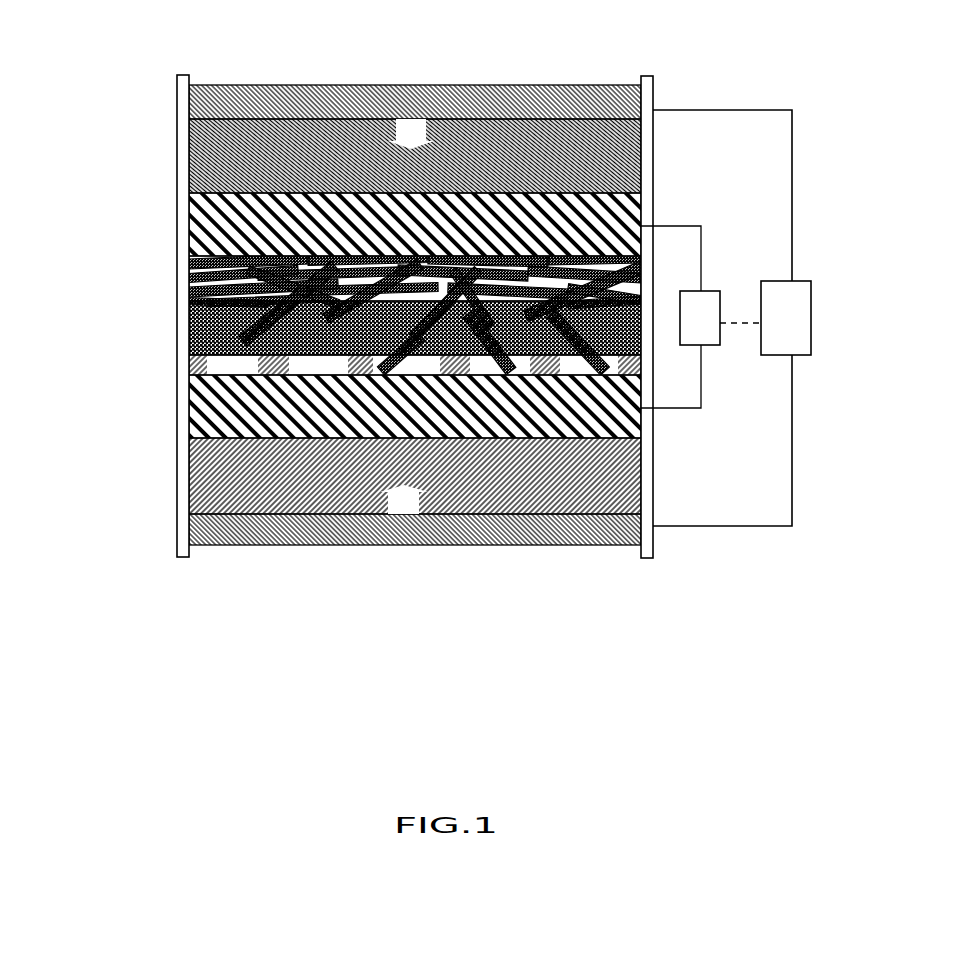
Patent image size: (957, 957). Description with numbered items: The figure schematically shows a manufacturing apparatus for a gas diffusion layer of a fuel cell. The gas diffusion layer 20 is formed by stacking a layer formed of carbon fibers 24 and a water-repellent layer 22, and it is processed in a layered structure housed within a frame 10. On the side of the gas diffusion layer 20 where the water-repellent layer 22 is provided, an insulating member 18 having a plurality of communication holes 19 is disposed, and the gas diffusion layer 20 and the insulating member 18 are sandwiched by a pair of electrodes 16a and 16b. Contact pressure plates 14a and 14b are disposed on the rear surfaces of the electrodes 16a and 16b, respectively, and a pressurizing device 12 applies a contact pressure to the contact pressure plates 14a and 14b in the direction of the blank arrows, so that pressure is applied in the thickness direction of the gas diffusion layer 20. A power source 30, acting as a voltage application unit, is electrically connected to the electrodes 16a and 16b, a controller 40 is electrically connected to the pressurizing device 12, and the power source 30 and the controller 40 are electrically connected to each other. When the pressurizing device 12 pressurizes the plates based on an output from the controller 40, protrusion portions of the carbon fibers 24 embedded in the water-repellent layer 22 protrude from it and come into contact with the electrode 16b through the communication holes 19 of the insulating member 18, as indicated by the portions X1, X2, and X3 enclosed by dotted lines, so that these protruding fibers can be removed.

The frame 10 is at (170, 540).
The pressurizing device 12 is at (513, 77).
The contact pressure plate 14a is at (187, 134).
The contact pressure plate 14b is at (186, 465).
The electrode 16a is at (186, 206).
The electrode 16b is at (186, 400).
The insulating member 18 is at (186, 359).
The communication hole 19 is at (222, 357).
The gas diffusion layer 20 is at (343, 314).
The water-repellent layer 22 is at (186, 320).
The carbon fibers 24 is at (186, 262).
The power source 30 is at (700, 337).
The controller 40 is at (803, 337).
The portion X1 is at (485, 372).
The portion X2 is at (527, 372).
The portion X3 is at (588, 372).